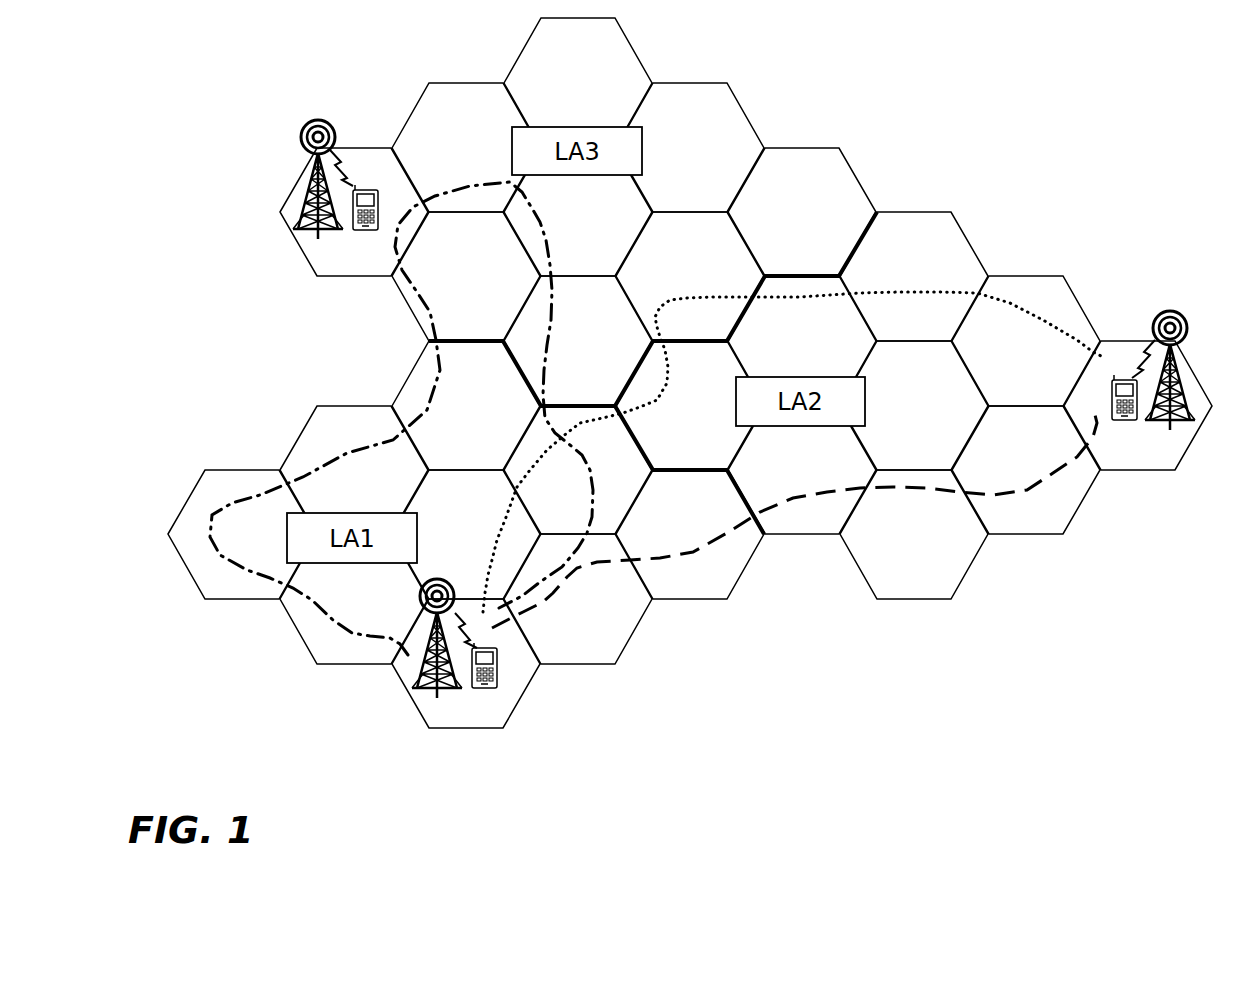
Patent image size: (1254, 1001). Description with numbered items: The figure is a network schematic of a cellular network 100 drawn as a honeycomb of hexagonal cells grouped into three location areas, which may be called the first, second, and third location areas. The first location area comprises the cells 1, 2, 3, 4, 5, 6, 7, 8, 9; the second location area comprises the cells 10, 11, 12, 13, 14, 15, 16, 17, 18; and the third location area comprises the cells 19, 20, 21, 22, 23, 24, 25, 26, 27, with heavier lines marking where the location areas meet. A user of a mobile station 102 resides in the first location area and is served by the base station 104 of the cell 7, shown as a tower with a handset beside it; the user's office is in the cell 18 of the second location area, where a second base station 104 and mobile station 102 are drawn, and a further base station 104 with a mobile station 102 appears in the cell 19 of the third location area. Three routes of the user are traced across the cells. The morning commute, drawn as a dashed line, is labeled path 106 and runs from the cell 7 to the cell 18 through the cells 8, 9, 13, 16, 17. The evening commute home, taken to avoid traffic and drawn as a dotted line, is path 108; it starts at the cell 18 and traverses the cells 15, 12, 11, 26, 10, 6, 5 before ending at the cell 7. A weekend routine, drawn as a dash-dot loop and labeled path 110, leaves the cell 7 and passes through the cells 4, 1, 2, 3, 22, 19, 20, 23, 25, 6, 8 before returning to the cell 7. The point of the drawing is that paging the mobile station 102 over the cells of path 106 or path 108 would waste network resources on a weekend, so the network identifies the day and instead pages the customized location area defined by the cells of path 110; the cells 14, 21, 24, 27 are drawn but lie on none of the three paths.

The cellular network 100 is at (1060, 146).
The mobile station 102 is at (496, 668).
The base station 104 is at (426, 692).
The path 106 is at (712, 546).
The path 108 is at (939, 292).
The path 110 is at (363, 448).
The cell 1 is at (242, 534).
The cell 2 is at (354, 470).
The cell 3 is at (466, 405).
The cell 4 is at (354, 599).
The cell 5 is at (466, 534).
The cell 6 is at (578, 470).
The cell 7 is at (466, 663).
The cell 8 is at (578, 599).
The cell 9 is at (690, 534).
The cell 10 is at (690, 405).
The cell 11 is at (802, 341).
The cell 12 is at (914, 276).
The cell 13 is at (802, 470).
The cell 14 is at (914, 405).
The cell 15 is at (1026, 341).
The cell 16 is at (914, 534).
The cell 17 is at (1026, 470).
The cell 18 is at (1138, 405).
The cell 19 is at (354, 212).
The cell 20 is at (466, 147).
The cell 21 is at (578, 83).
The cell 22 is at (466, 276).
The cell 23 is at (578, 212).
The cell 24 is at (690, 147).
The cell 25 is at (578, 341).
The cell 26 is at (690, 276).
The cell 27 is at (802, 212).